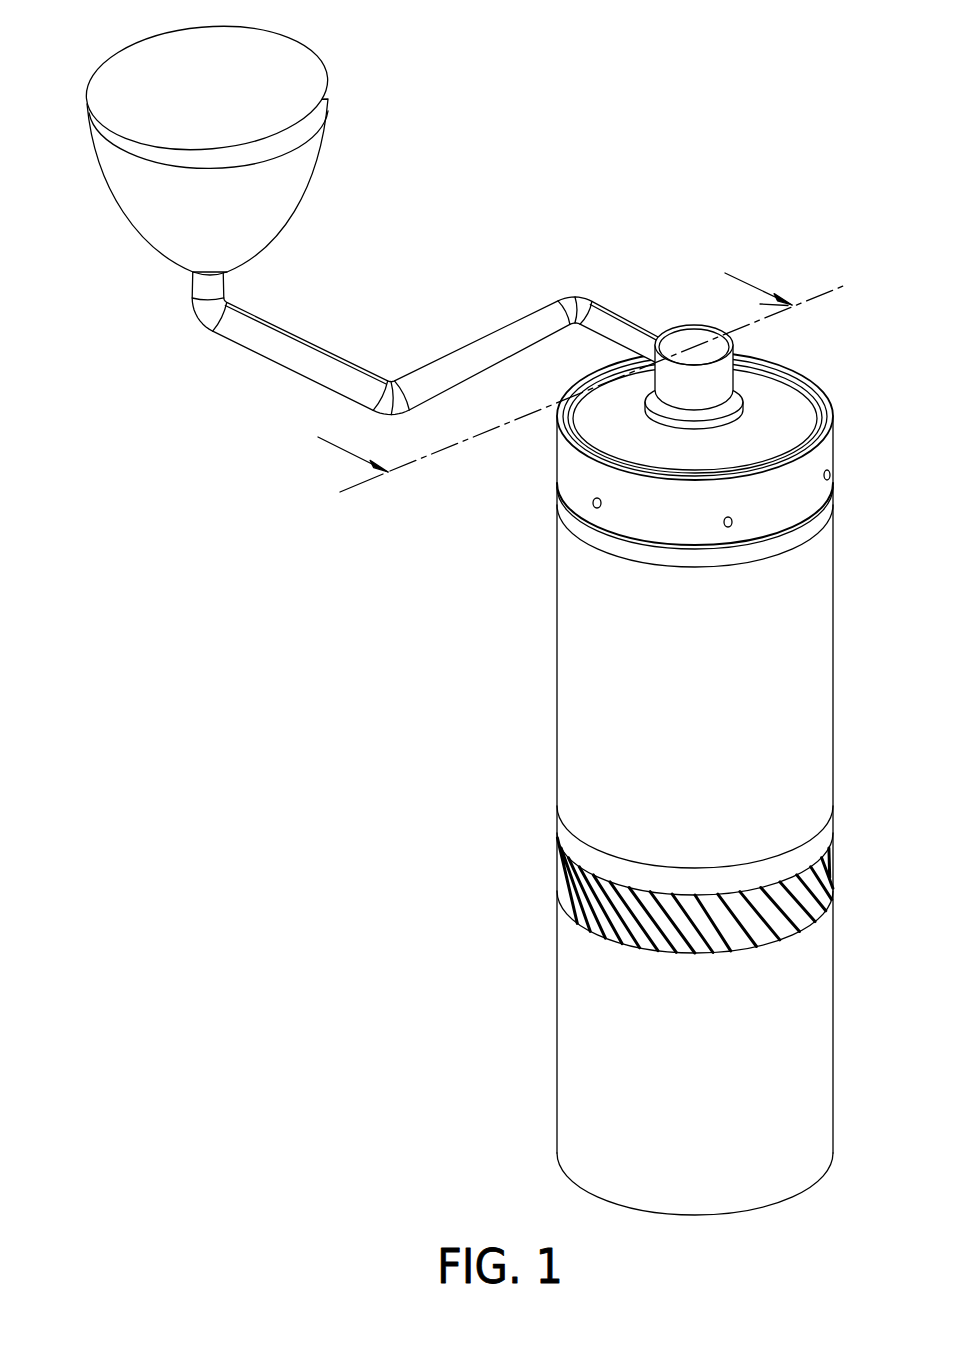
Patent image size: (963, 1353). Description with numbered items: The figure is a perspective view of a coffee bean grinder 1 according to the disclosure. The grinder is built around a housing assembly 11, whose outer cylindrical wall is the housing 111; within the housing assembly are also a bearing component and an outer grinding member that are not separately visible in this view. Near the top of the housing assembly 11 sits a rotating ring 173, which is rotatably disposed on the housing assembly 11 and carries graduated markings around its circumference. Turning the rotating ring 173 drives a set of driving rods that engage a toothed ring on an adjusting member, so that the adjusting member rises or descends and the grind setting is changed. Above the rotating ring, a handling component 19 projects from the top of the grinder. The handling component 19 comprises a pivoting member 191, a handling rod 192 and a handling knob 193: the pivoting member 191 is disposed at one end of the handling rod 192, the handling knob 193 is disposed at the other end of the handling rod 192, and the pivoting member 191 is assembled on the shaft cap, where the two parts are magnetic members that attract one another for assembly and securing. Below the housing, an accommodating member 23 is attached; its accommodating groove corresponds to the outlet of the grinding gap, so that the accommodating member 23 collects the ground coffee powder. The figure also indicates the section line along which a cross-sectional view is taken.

The coffee bean grinder 1 is at (464, 616).
The housing assembly 11 is at (628, 815).
The housing 111 is at (602, 735).
The rotating ring 173 is at (580, 482).
The handling component 19 is at (412, 223).
The pivoting member 191 is at (680, 340).
The handling rod 192 is at (310, 363).
The handling knob 193 is at (233, 92).
The accommodating member 23 is at (630, 1040).